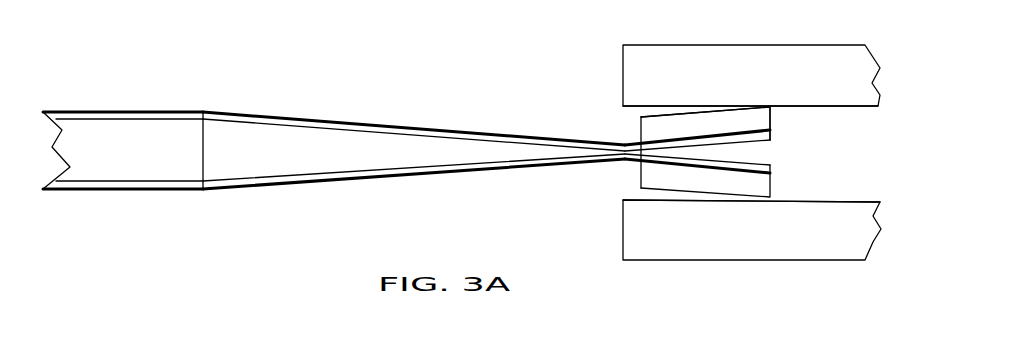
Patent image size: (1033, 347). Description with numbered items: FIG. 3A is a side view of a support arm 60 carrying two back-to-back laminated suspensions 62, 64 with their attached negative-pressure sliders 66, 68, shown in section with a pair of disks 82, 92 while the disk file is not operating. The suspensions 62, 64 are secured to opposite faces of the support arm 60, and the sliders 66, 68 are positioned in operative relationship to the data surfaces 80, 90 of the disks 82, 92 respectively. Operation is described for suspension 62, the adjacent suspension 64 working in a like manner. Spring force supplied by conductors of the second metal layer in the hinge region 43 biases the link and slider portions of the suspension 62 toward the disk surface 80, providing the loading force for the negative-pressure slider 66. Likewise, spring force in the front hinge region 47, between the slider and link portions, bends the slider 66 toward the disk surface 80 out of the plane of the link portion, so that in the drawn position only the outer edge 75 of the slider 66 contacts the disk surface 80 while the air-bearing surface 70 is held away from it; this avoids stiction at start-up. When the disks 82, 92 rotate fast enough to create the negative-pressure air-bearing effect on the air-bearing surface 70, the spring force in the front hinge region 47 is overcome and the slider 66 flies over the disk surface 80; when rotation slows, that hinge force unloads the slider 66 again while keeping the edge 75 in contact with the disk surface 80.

The support arm 60 is at (118, 138).
The hinge region 43 is at (203, 112).
The laminated suspension 62 is at (310, 120).
The laminated suspension 64 is at (280, 180).
The front hinge region 47 is at (625, 143).
The negative-pressure slider 66 is at (632, 118).
The negative-pressure slider 68 is at (632, 177).
The air-bearing surface 70 is at (670, 117).
The outer edge 75 is at (772, 108).
The data surface 80 is at (848, 106).
The disk 82 is at (763, 50).
The data surface 90 is at (827, 200).
The disk 92 is at (812, 237).